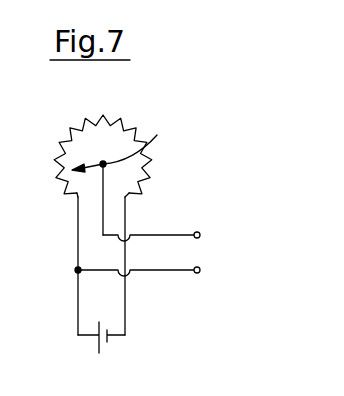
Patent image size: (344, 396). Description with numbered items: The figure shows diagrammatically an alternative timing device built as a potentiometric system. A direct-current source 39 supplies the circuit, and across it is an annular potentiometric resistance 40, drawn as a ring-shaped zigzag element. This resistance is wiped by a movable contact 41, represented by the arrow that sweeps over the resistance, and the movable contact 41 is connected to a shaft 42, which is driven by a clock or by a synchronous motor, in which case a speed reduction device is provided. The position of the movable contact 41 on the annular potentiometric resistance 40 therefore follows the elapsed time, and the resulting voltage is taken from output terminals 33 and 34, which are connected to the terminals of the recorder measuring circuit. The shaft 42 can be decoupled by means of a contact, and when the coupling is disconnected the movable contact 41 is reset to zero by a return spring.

The annular potentiometric resistance 40 is at (116, 117).
The movable contact 41 is at (57, 163).
The shaft 42 is at (142, 180).
The output terminal 33 is at (199, 231).
The output terminal 34 is at (201, 270).
The direct-current source 39 is at (104, 343).